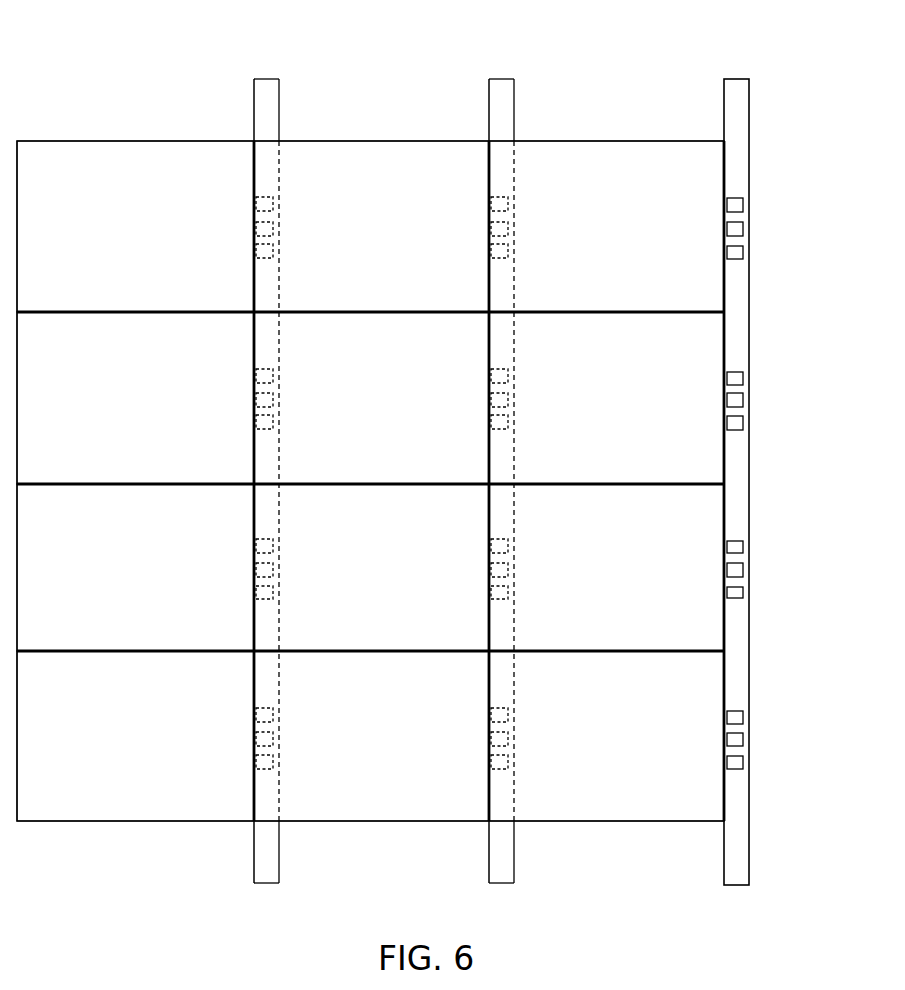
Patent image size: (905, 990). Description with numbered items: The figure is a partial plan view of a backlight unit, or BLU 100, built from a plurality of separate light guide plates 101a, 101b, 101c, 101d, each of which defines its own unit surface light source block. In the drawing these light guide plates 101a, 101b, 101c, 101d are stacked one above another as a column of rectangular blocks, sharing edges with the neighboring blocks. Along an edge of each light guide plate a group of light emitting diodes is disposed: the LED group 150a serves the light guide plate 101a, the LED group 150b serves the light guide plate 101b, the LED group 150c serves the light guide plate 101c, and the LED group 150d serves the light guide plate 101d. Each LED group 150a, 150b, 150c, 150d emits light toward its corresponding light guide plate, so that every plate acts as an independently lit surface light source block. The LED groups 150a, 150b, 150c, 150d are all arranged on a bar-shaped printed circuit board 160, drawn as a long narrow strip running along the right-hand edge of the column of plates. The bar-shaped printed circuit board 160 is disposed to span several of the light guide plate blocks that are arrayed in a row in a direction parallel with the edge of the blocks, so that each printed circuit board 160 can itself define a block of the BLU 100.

The backlight unit 100 is at (792, 34).
The light guide plate 101a is at (598, 162).
The light guide plate 101b is at (680, 455).
The light guide plate 101c is at (667, 612).
The fourth display panel 101d is at (665, 793).
The LED group 150a is at (735, 212).
The LED group 150b is at (735, 398).
The LED group 150c is at (735, 569).
The fourth connection pads 150d is at (735, 742).
The bar-shaped printed circuit board 160 is at (738, 130).